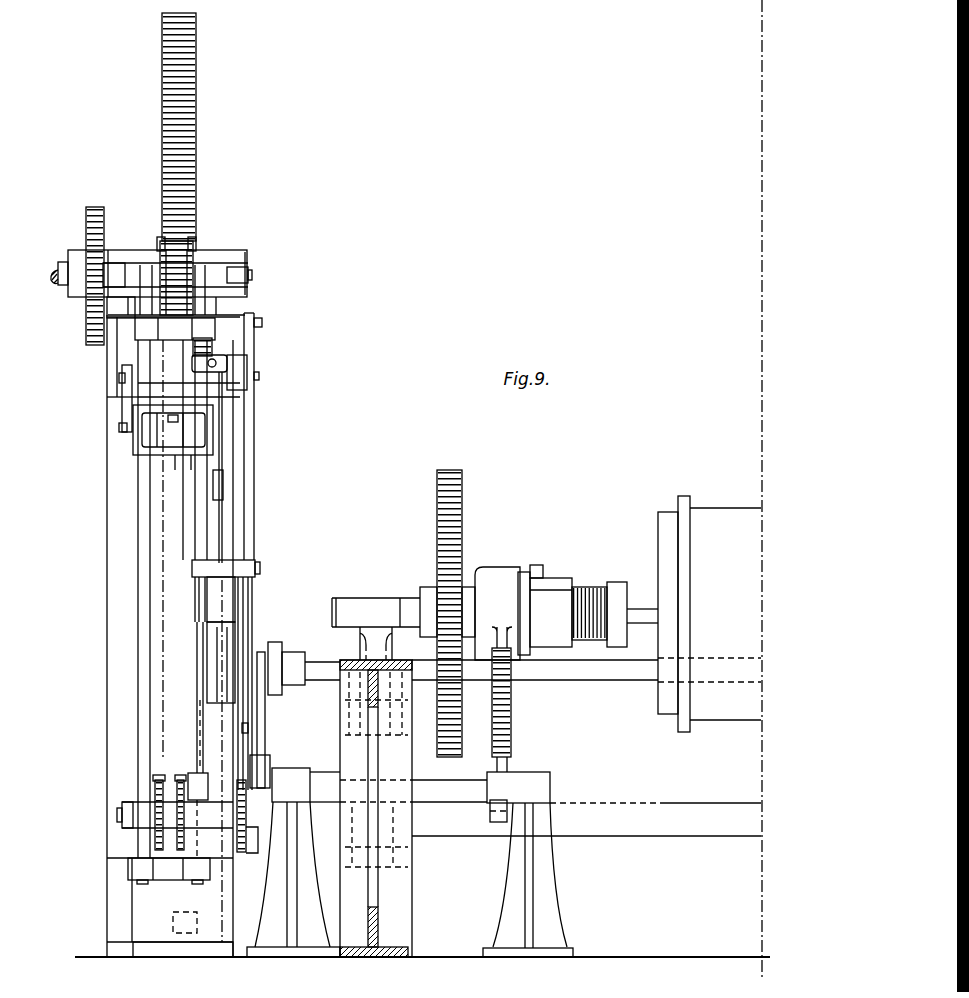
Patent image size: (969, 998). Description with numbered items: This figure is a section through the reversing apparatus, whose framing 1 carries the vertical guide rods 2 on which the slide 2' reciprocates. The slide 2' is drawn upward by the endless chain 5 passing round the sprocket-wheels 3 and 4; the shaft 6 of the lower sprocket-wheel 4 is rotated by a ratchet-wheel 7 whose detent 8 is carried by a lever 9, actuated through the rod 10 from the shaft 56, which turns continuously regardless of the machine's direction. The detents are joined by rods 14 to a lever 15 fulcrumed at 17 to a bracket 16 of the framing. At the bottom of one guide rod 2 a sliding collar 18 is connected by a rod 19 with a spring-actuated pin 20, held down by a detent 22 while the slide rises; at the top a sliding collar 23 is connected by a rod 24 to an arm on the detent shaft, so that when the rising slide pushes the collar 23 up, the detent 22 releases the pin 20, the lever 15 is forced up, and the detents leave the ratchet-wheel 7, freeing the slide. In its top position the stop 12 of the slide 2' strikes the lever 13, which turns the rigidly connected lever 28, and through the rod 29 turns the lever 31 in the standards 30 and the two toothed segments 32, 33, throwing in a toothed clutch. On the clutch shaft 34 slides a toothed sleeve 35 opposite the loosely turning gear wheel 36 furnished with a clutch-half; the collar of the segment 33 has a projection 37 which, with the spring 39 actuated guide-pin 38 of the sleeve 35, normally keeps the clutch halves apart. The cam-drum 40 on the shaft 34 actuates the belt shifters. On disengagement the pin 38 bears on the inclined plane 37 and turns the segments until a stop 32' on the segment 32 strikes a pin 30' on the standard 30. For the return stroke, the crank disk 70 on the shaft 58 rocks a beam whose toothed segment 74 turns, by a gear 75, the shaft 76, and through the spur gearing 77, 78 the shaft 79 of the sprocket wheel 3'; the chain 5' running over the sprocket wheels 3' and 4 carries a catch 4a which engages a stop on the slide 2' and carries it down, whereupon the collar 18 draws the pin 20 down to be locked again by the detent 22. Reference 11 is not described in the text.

The framing 1 is at (115, 503).
The vertical guide rods 2 is at (178, 450).
The slide 2' is at (177, 468).
The sprocket-wheel 3 is at (215, 231).
The sprocket wheel 3' is at (151, 231).
The lower sprocket-wheel 4 is at (180, 777).
The catch 4a is at (178, 418).
The endless chain 5 is at (166, 599).
The chain 5' is at (141, 599).
The shaft 6 is at (120, 813).
The ratchet-wheel 7 is at (242, 853).
The detent 8 is at (240, 767).
The lever 9 is at (267, 767).
The rod 10 is at (262, 710).
The threaded rods 11 is at (157, 787).
The stop 12 is at (125, 427).
The lever 13 is at (128, 407).
The rods 14 is at (247, 605).
The lever 15 is at (243, 568).
The bracket 16 is at (218, 597).
The fulcrum 17 is at (195, 570).
The sliding collar 18 is at (197, 802).
The rod 19 is at (197, 737).
The spring-actuated pin 20 is at (200, 635).
The detent 22 is at (197, 600).
The sliding collar 23 is at (228, 362).
The rod 24 is at (223, 457).
The lever 28 is at (248, 348).
The rod 29 is at (252, 498).
The standards 30 is at (410, 862).
The pin 30' is at (469, 840).
The lever 31 is at (267, 743).
The toothed segment 32 is at (520, 710).
The stop 32' is at (463, 816).
The toothed segment 33 is at (513, 690).
The shaft 34 is at (632, 607).
The toothed sleeve 35 is at (550, 588).
The gear wheel 36 is at (443, 518).
The projection 37 is at (521, 575).
The guide-pin 38 is at (545, 573).
The spring 39 is at (583, 588).
The cam-drum 40 is at (743, 714).
The shaft 56 is at (623, 677).
The shaft 58 is at (682, 831).
The crank disk 70 is at (210, 944).
The toothed segment 74 is at (197, 124).
The gear 75 is at (194, 230).
The shaft 76 is at (64, 287).
The spur gearing 77 is at (97, 203).
The spur gearing 78 is at (84, 300).
The shaft 79 is at (252, 272).